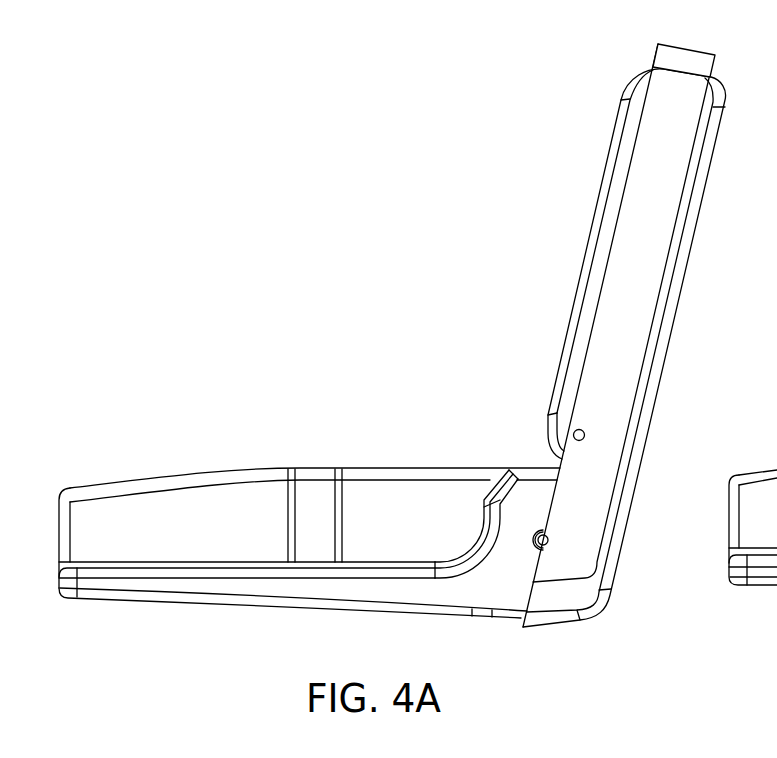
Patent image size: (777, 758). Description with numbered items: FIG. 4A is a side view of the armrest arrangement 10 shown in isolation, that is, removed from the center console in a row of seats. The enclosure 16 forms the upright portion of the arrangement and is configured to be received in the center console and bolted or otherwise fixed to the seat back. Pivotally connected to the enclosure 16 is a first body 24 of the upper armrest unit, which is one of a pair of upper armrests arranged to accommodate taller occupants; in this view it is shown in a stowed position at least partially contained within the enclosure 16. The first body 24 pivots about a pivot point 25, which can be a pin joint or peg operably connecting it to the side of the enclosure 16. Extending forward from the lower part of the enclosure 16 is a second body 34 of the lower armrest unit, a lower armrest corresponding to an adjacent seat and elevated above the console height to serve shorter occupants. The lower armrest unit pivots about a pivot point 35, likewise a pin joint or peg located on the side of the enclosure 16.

The armrest arrangement 10 is at (452, 198).
The enclosure 16 is at (678, 120).
The first body 24 is at (598, 288).
The pivot point 25 is at (585, 433).
The second body 34 is at (322, 588).
The pivot point 35 is at (551, 537).